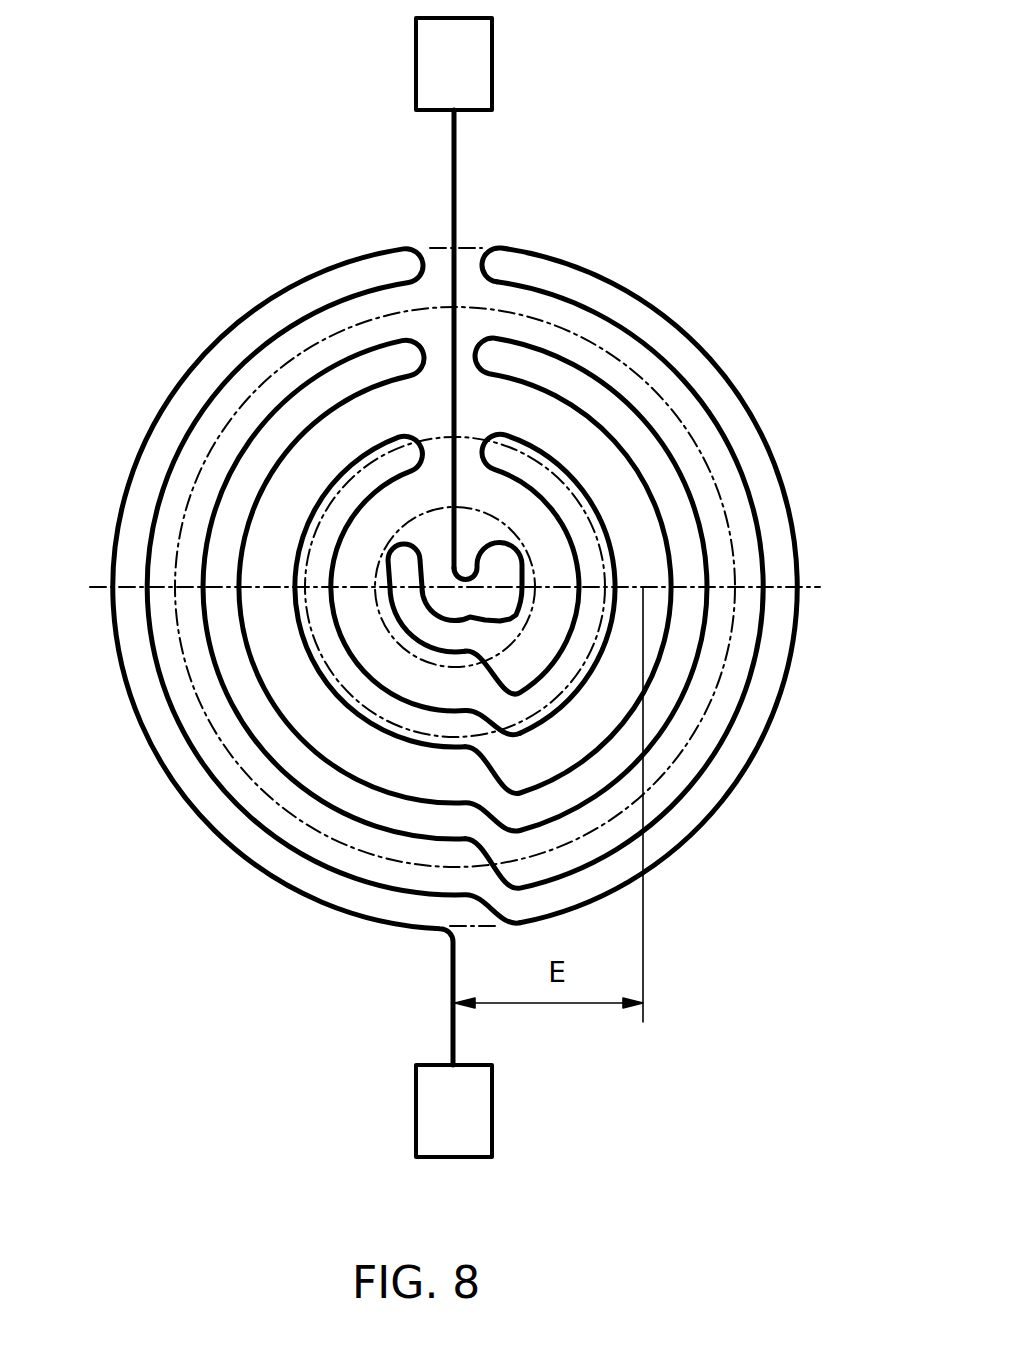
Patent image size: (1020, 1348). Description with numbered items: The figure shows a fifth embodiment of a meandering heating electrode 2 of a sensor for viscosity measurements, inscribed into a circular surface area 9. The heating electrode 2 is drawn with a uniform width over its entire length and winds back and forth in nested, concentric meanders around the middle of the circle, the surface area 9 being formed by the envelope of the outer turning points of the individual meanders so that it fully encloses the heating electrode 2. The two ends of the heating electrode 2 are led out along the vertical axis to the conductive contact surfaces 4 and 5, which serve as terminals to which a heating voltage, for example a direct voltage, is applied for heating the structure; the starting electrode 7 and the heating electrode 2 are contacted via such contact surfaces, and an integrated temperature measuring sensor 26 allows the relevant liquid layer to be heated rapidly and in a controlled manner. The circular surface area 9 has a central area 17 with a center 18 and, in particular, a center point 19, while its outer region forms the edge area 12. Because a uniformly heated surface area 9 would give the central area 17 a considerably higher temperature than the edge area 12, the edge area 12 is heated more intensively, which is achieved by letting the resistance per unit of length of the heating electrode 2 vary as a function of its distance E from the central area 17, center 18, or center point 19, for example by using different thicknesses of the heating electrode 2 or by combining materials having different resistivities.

The heating electrode 2 is at (485, 587).
The starting electrode 7 is at (485, 587).
The temperature measuring sensor 26 is at (485, 587).
The contact surface 4 is at (492, 62).
The contact surface 5 is at (492, 1110).
The surface area 9 is at (690, 805).
The edge area 12 is at (762, 693).
The central area 17 is at (313, 658).
The center 18 is at (352, 611).
The center point 19 is at (445, 601).